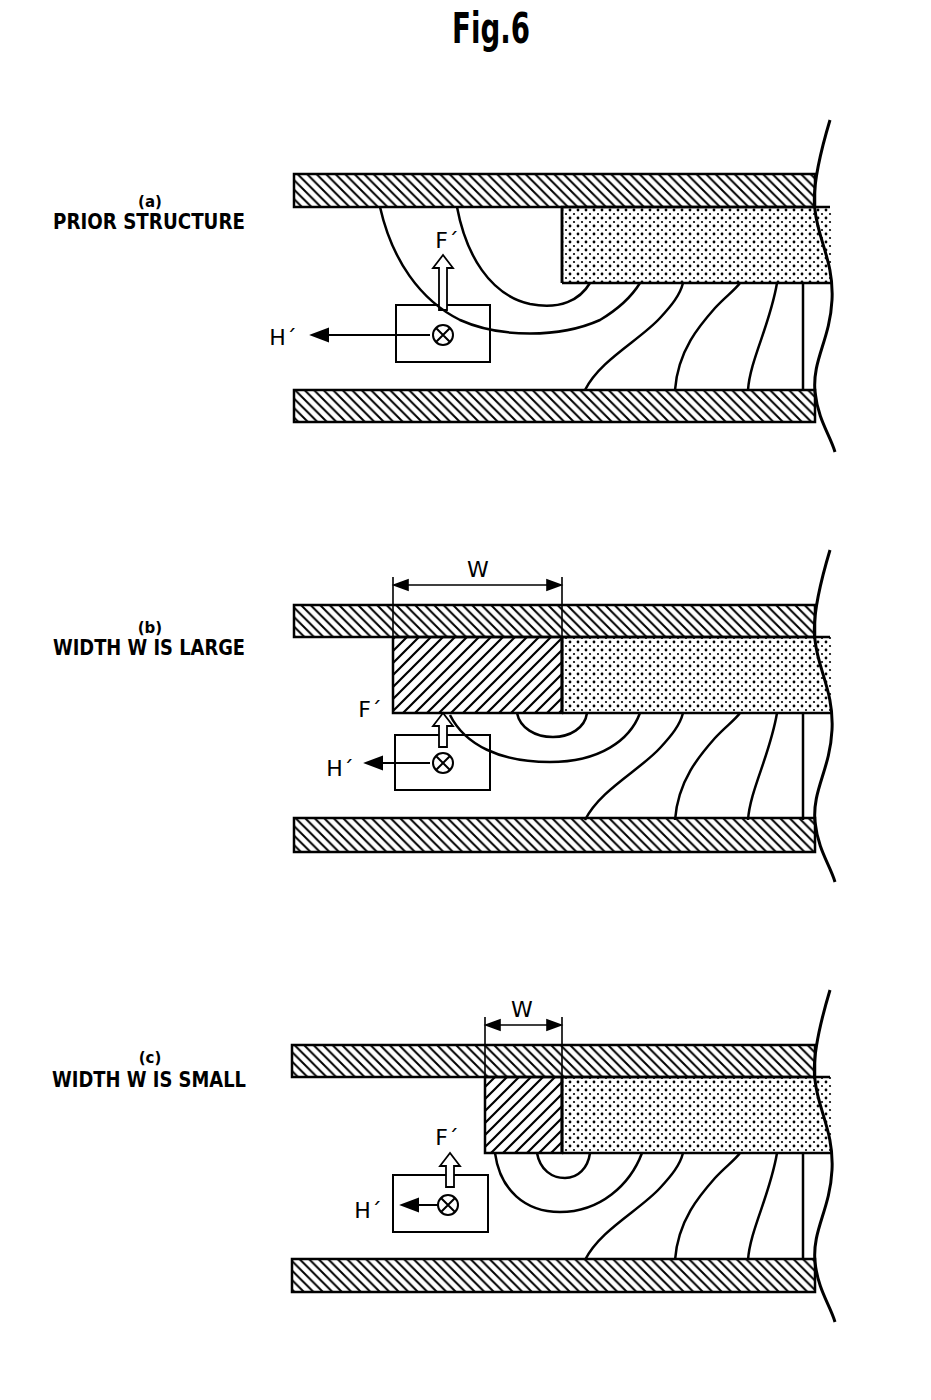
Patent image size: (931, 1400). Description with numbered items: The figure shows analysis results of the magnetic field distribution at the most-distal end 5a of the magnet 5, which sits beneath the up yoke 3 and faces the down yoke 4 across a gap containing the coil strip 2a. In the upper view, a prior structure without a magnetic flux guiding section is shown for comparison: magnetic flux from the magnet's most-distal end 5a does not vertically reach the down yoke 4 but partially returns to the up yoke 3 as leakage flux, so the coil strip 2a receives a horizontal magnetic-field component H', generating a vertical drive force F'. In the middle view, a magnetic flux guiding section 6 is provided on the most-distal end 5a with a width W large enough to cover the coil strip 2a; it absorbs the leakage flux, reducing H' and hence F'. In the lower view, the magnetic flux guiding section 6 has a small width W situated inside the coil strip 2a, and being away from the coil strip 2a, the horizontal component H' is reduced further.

The up yoke 3 is at (402, 192).
The down yoke 4 is at (404, 410).
The magnet 5 is at (693, 218).
The magnet's most-distal end 5a is at (577, 240).
The coil strip 2a is at (460, 355).
The magnetic flux guiding section 6 is at (432, 657).